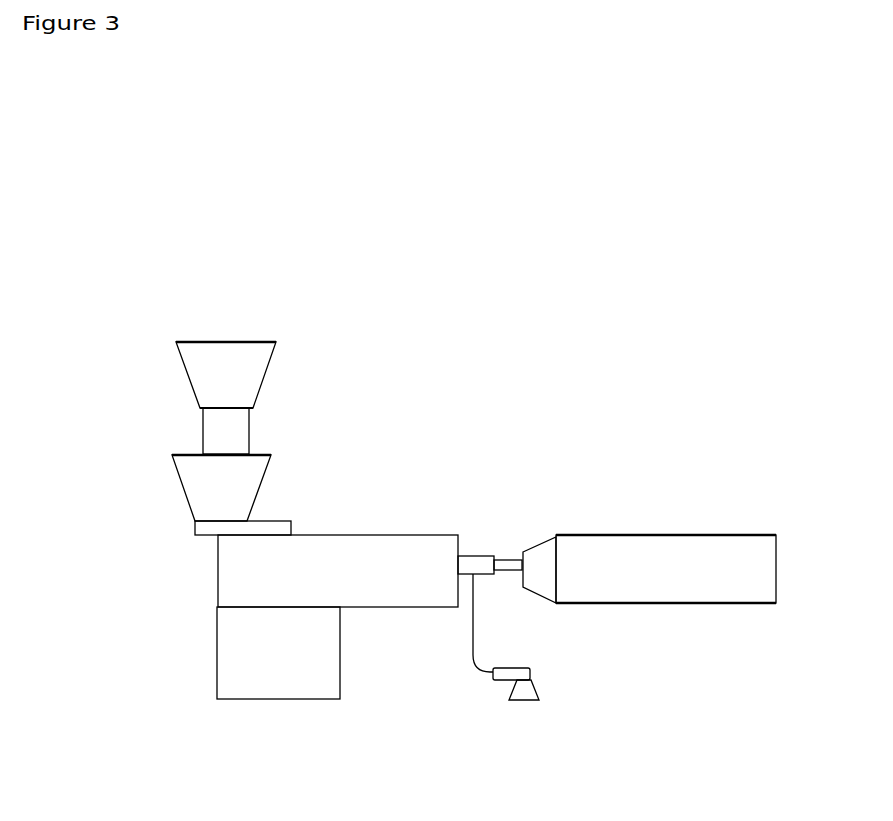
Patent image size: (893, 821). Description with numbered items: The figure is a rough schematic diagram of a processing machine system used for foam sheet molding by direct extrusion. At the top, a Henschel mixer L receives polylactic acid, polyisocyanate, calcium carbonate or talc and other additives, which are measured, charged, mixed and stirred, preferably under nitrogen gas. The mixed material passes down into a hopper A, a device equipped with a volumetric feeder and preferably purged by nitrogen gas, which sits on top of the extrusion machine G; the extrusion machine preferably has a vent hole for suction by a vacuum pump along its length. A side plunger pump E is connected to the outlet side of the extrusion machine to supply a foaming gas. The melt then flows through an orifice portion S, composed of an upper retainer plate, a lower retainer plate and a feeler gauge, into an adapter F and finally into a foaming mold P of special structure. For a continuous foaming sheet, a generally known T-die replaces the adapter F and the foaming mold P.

The Henschel mixer L is at (252, 365).
The hopper A is at (245, 483).
The extrusion machine G is at (337, 617).
The orifice portion S is at (510, 560).
The adapter F is at (542, 540).
The foaming mold P is at (666, 569).
The side plunger pump E is at (530, 674).